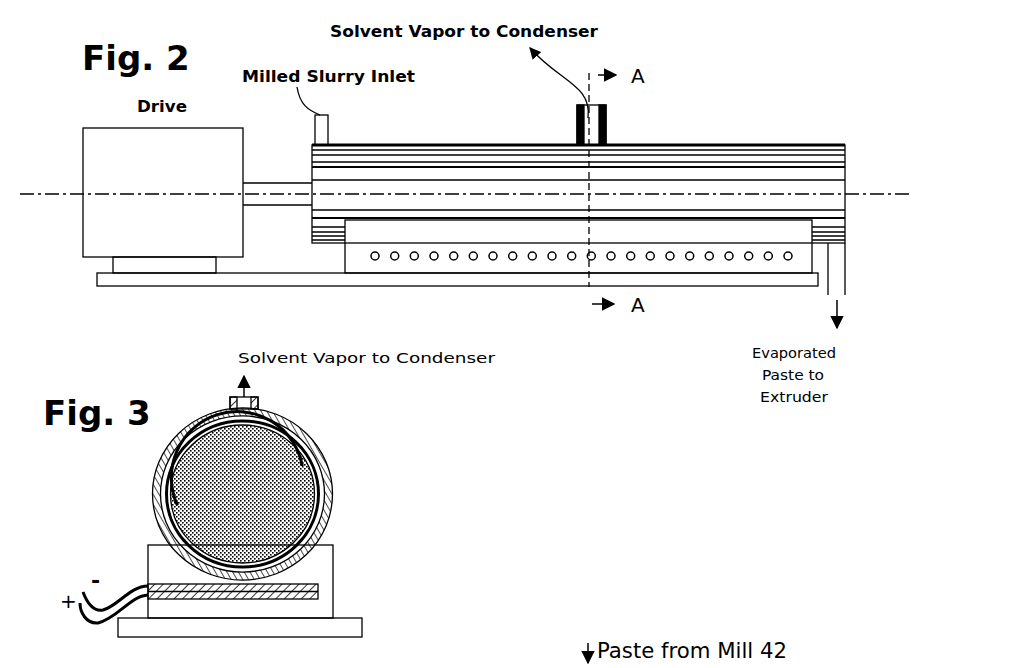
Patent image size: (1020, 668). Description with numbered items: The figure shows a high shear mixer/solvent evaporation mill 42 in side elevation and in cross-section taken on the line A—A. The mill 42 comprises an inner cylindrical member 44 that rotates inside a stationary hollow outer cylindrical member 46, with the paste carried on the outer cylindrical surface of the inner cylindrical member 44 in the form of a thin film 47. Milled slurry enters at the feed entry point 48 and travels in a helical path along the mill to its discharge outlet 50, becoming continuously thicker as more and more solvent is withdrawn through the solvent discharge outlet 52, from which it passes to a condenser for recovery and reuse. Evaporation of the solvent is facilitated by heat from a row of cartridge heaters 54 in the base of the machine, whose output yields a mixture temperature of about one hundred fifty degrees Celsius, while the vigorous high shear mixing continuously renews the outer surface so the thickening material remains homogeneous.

In FIG. 2, the high shear mixer/solvent evaporation mill 42 is at (686, 145).
In FIG. 3, the high shear mixer/solvent evaporation mill 42 is at (333, 520).
In FIG. 3, the inner cylindrical member 44 is at (205, 513).
In FIG. 3, the stationary hollow outer cylindrical member 46 is at (333, 483).
In FIG. 3, the thin film 47 is at (300, 455).
In FIG. 2, the feed entry point 48 is at (328, 120).
In FIG. 2, the discharge outlet 50 is at (845, 273).
In FIG. 2, the solvent discharge outlet 52 is at (577, 128).
In FIG. 3, the solvent discharge outlet 52 is at (258, 402).
In FIG. 2, the cartridge heaters 54 is at (588, 262).
In FIG. 3, the cartridge heaters 54 is at (323, 592).